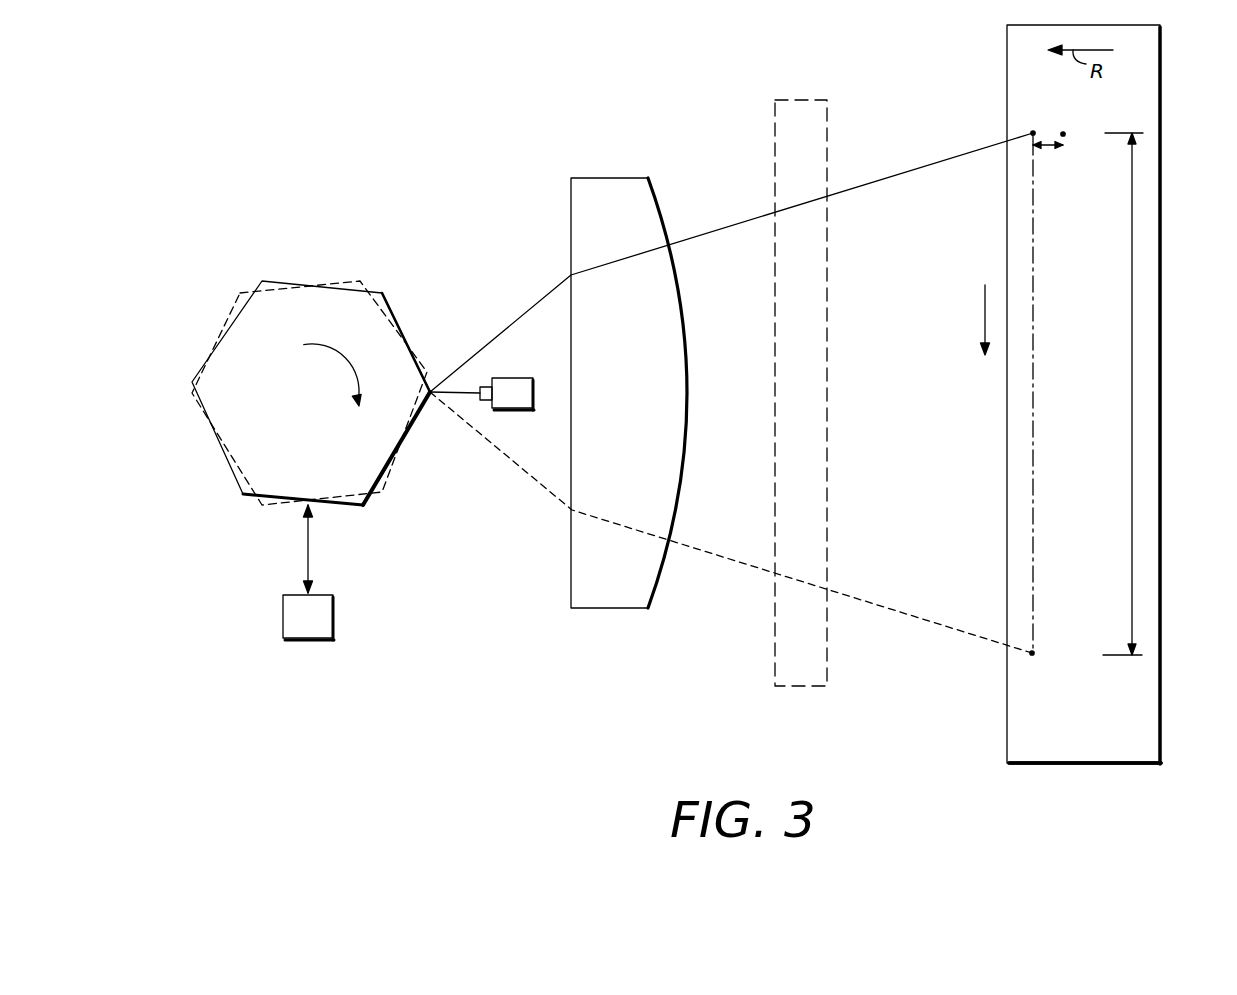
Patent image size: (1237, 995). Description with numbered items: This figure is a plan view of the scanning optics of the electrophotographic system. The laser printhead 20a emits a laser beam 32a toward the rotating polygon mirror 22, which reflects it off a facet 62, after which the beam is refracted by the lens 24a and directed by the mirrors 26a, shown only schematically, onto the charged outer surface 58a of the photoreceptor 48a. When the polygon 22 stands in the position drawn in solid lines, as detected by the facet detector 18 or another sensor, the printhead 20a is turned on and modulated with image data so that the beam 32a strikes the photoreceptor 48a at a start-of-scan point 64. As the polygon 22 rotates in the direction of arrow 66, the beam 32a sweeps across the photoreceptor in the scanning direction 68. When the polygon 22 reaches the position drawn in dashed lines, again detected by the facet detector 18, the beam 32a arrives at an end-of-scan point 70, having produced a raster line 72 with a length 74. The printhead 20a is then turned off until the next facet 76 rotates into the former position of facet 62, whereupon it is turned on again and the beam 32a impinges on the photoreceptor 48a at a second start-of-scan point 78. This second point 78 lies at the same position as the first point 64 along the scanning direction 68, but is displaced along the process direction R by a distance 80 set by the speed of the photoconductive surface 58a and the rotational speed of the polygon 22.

The facet detector 18 is at (308, 572).
The laser printhead 20a is at (505, 410).
The polygon mirror 22 is at (311, 393).
The lens 24a is at (605, 178).
The mirrors 26a is at (792, 100).
The laser beam 32a is at (517, 320).
The photoreceptor 48a is at (1162, 232).
The charged outer surface 58a is at (1148, 710).
The facet 62 is at (393, 305).
The start-of-scan point 64 is at (1033, 133).
The arrow 66 is at (342, 380).
The scanning direction 68 is at (985, 318).
The end-of-scan point 70 is at (1032, 658).
The raster line 72 is at (1032, 425).
The length 74 is at (1132, 388).
The next facet 76 is at (280, 282).
The second start-of-scan point 78 is at (1063, 134).
The distance 80 is at (1050, 138).